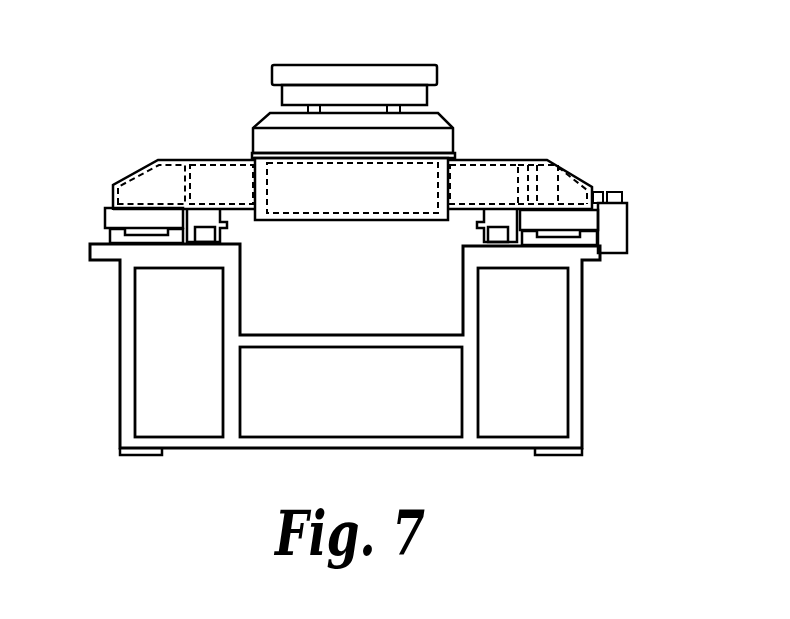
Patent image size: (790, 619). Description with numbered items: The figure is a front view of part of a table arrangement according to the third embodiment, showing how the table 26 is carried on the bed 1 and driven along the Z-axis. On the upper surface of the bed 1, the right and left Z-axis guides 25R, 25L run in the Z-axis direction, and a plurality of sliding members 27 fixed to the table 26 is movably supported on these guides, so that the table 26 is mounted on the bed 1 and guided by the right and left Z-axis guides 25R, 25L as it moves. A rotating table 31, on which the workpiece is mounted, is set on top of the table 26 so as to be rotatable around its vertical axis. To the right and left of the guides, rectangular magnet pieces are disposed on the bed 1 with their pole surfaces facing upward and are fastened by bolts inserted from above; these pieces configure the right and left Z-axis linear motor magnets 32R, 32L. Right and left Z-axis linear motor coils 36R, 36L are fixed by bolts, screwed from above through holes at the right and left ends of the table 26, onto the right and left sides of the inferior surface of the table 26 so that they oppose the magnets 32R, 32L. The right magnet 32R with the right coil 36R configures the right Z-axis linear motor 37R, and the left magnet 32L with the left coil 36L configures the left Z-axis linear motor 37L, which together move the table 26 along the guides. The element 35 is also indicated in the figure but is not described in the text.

The bed 1 is at (575, 372).
The left Z-axis guide 25L is at (205, 238).
The right Z-axis guide 25R is at (498, 247).
The table 26 is at (497, 175).
The sliding members 27 is at (220, 223).
The rotating table 31 is at (440, 123).
The left Z-axis linear motor magnet 32L is at (126, 232).
The right Z-axis linear motor magnet 32R is at (578, 233).
The inclined wall 35 is at (563, 208).
The left Z-axis linear motor coil 36L is at (104, 216).
The right Z-axis linear motor coil 36R is at (597, 220).
The left Z-axis linear motor 37L is at (103, 184).
The right Z-axis linear motor 37R is at (594, 172).